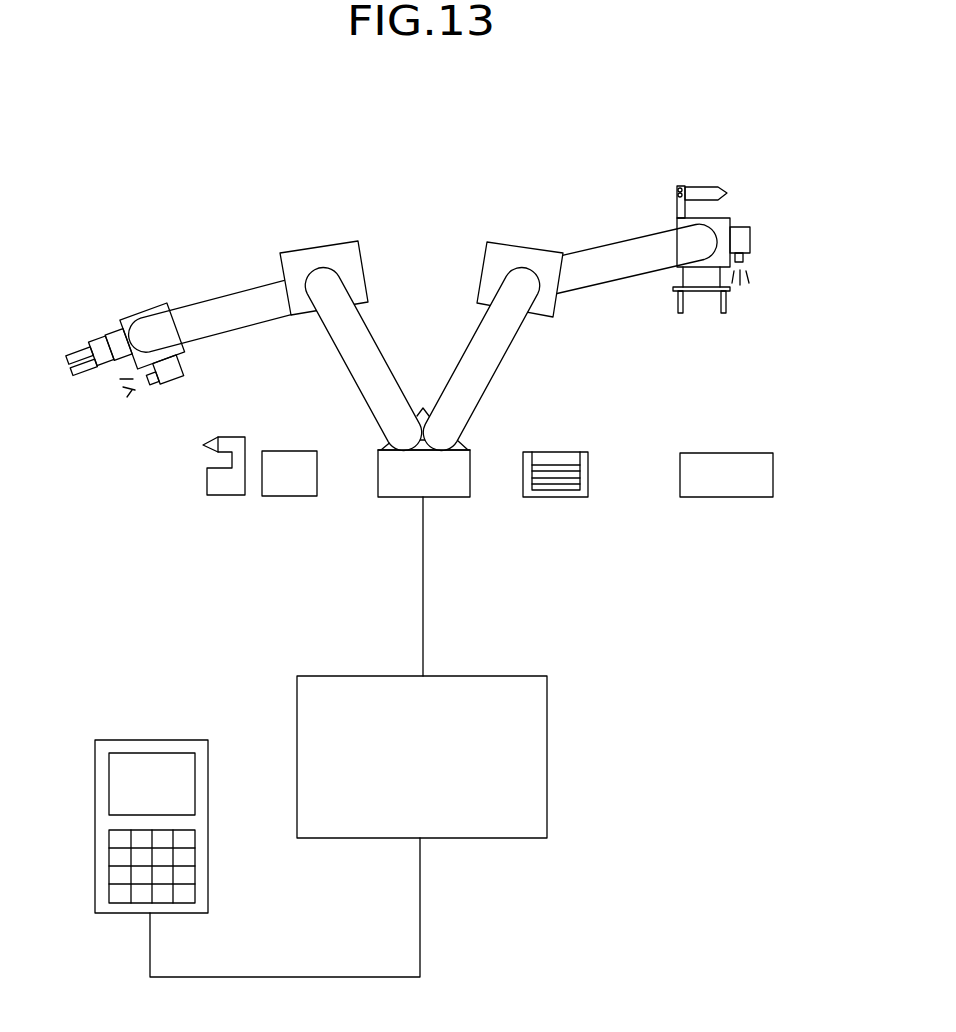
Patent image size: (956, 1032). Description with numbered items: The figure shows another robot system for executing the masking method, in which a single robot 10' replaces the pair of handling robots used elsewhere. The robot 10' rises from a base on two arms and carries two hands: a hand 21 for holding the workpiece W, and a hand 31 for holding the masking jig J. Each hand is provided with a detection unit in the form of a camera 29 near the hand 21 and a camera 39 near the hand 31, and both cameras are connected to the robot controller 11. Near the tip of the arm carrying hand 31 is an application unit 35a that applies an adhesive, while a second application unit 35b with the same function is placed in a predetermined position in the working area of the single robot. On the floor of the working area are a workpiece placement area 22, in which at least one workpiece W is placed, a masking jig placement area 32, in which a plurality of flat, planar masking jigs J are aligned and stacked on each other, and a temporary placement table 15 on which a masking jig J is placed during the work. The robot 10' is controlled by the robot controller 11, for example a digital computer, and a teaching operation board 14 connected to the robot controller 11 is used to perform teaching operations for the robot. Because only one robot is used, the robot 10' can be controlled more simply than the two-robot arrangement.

The single robot 10' is at (423, 388).
The hand 21 is at (73, 340).
The camera 29 is at (167, 383).
The application unit 35b is at (220, 440).
The workpiece placement area 22 is at (288, 483).
The masking jig J is at (547, 463).
The masking jig placement area 32 is at (553, 492).
The temporary placement table 15 is at (733, 477).
The application unit 35a is at (711, 193).
The camera 39 is at (742, 242).
The hand 31 is at (718, 303).
The robot controller 11 is at (547, 765).
The teaching operation board 14 is at (208, 878).